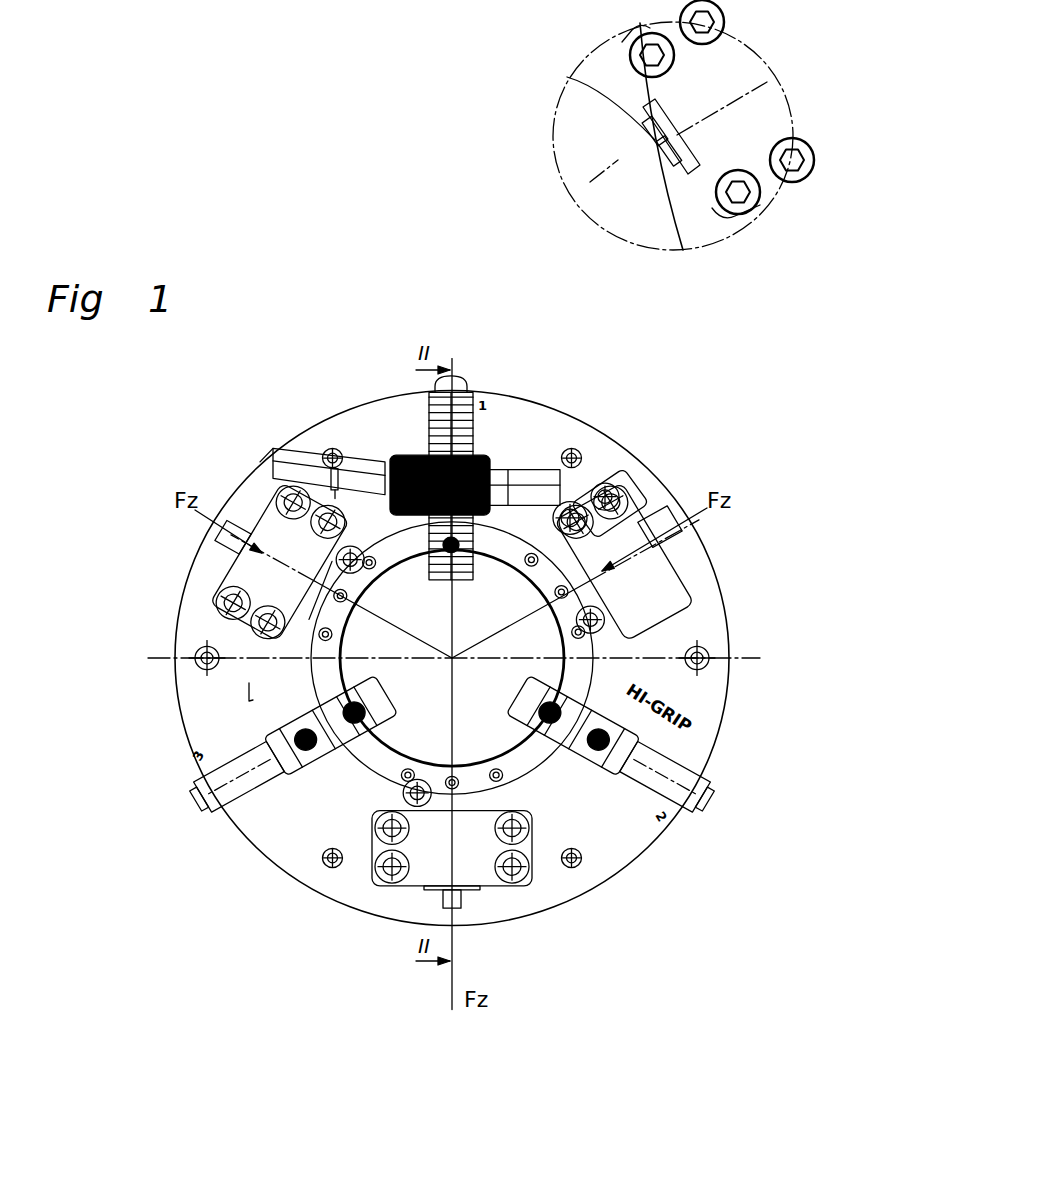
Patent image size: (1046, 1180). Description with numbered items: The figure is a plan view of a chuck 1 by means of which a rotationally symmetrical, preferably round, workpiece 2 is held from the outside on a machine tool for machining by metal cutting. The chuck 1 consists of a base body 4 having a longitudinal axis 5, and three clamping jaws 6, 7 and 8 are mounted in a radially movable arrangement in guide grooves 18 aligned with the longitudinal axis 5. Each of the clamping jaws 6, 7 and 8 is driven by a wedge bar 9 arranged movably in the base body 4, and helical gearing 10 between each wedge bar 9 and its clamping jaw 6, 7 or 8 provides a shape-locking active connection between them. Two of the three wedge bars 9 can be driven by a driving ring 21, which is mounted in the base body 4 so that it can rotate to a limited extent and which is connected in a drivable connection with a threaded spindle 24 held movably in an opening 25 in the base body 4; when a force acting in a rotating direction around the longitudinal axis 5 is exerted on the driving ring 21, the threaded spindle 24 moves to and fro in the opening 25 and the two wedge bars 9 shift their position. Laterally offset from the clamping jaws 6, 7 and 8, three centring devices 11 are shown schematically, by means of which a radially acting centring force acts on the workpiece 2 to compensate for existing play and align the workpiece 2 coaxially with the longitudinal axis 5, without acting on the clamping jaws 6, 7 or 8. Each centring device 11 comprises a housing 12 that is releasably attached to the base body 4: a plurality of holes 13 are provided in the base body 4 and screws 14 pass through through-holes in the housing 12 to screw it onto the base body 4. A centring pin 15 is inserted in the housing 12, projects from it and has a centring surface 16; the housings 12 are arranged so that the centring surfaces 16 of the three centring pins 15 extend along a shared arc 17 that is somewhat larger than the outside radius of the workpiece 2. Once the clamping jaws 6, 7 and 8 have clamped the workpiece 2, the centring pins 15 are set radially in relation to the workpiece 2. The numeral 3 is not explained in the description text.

The chuck 1 is at (808, 380).
The workpiece 2 is at (577, 672).
The chuck face ring 3 is at (597, 647).
The base body 4 is at (613, 458).
The longitudinal axis 5 is at (612, 510).
The clamping jaw 6 is at (490, 462).
The clamping jaw 7 is at (452, 660).
The clamping jaw 8 is at (452, 658).
The wedge bar 9 is at (405, 455).
The helical gearing 10 is at (470, 458).
The centring device 11 is at (260, 572).
The housing 12 is at (228, 625).
The holes 13 is at (533, 882).
The screws 14 is at (512, 880).
The centring pin 15 is at (595, 588).
The centring surface 16 is at (317, 577).
The shared arc 17 is at (535, 558).
The guide grooves 18 is at (280, 773).
The driving ring 21 is at (253, 700).
The threaded spindle 24 is at (383, 483).
The opening 25 is at (520, 505).